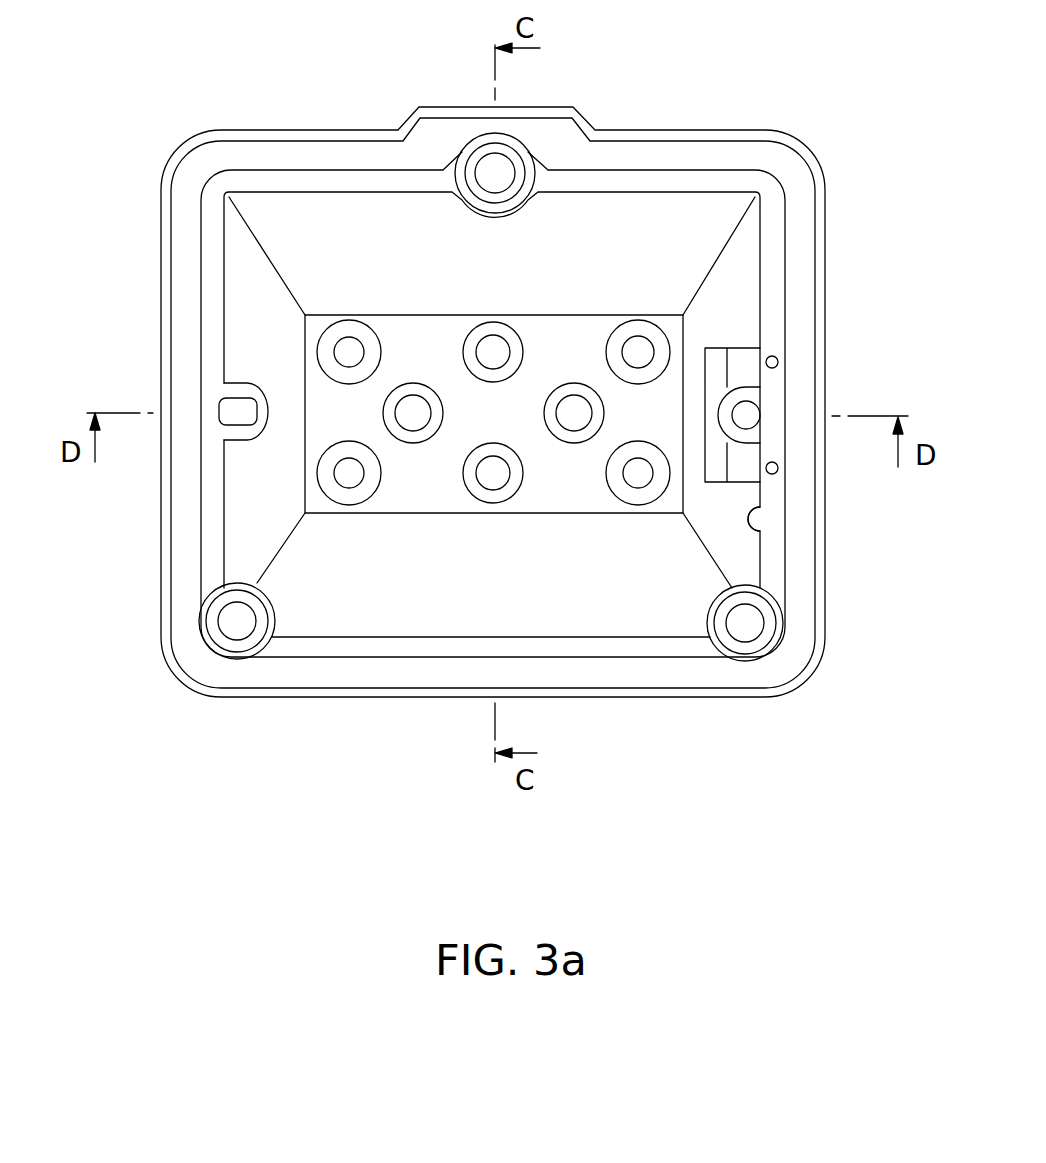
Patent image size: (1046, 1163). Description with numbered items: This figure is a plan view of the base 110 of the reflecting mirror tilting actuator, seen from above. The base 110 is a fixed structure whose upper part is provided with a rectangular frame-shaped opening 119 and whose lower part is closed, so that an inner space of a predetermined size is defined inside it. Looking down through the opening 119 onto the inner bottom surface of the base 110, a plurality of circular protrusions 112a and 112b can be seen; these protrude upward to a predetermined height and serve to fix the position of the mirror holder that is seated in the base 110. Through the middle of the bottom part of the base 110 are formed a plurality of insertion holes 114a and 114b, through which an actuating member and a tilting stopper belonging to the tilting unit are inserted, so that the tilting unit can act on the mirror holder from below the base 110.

The base 110 is at (803, 213).
The circular protrusion 112a is at (633, 343).
The circular protrusion 112b is at (340, 470).
The insertion hole 114a is at (495, 348).
The insertion hole 114b is at (487, 482).
The rectangular frame-shaped opening 119 is at (750, 531).